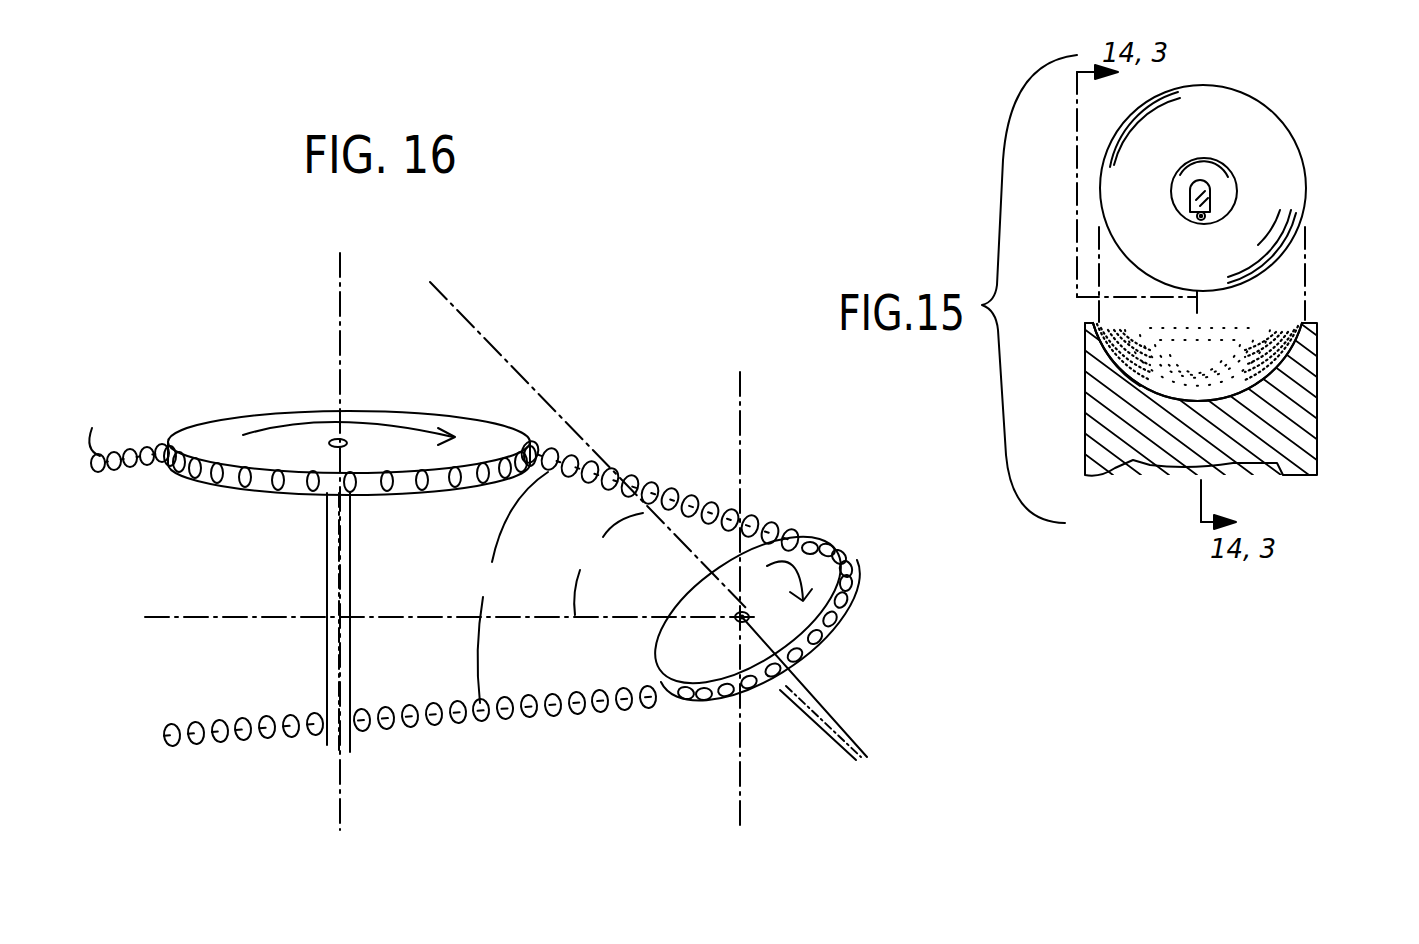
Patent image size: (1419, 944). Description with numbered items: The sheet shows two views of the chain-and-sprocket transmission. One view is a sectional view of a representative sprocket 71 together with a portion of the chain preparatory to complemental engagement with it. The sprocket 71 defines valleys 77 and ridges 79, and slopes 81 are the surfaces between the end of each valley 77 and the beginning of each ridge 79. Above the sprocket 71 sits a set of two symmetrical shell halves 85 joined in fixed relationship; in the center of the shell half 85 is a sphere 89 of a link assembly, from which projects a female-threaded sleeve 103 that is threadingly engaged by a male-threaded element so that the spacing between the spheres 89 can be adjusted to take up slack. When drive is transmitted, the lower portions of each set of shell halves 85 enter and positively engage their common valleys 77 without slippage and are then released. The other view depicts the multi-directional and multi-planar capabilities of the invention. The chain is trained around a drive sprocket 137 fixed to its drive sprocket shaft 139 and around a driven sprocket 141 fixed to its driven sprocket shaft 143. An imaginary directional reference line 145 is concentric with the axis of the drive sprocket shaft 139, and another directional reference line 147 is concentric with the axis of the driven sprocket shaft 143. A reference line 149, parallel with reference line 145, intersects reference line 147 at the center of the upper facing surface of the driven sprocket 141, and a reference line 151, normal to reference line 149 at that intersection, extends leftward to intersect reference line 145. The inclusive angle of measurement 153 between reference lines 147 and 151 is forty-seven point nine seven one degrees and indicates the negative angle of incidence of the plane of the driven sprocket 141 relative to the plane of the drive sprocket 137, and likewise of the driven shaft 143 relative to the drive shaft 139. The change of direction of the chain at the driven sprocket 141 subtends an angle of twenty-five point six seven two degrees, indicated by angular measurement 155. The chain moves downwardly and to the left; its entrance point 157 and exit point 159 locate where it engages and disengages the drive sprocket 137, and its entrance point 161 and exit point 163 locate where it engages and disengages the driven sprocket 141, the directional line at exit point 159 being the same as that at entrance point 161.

In FIG. 16, the drive sprocket 137 is at (302, 460).
In FIG. 16, the drive sprocket shaft 139 is at (326, 553).
In FIG. 16, the driven sprocket 141 is at (716, 660).
In FIG. 16, the driven sprocket shaft 143 is at (854, 712).
In FIG. 16, the directional reference line 145 is at (338, 273).
In FIG. 16, the directional reference line 147 is at (440, 290).
In FIG. 16, the directional reference line 149 is at (742, 457).
In FIG. 16, the directional reference line 151 is at (173, 618).
In FIG. 16, the inclusive angle of measurement 153 is at (603, 537).
In FIG. 16, the angular measurement 155 is at (492, 562).
In FIG. 16, the entrance point 157 is at (166, 446).
In FIG. 16, the exit point 159 is at (527, 444).
In FIG. 16, the entrance point 161 is at (785, 542).
In FIG. 16, the exit point 163 is at (690, 704).
In FIG. 15, the sprocket 71 is at (1322, 410).
In FIG. 15, the valley 77 is at (1193, 400).
In FIG. 15, the ridge 79 is at (1090, 322).
In FIG. 15, the slope 81 is at (1113, 360).
In FIG. 15, the shell half 85 is at (1226, 142).
In FIG. 15, the sphere 89 is at (1218, 176).
In FIG. 15, the female-threaded sleeve 103 is at (1237, 193).